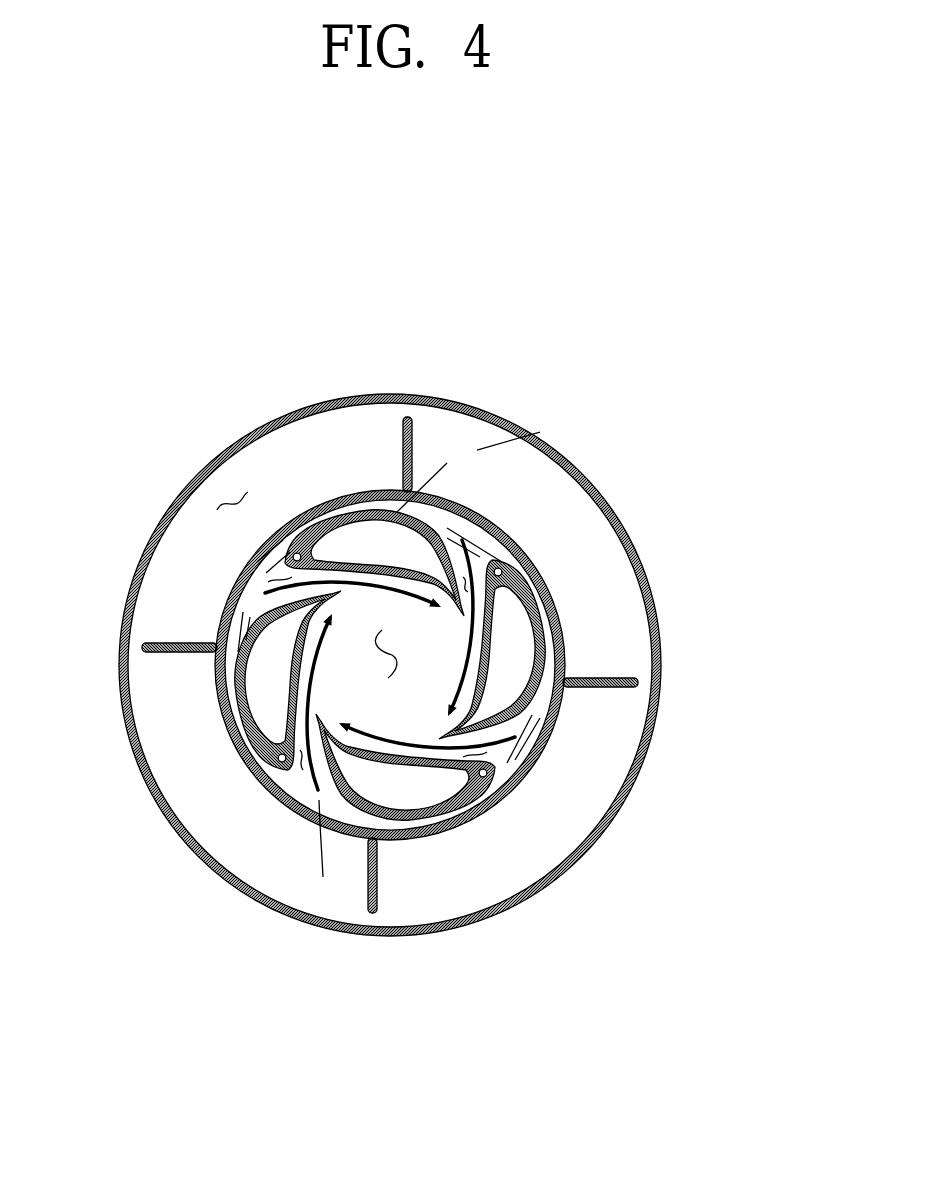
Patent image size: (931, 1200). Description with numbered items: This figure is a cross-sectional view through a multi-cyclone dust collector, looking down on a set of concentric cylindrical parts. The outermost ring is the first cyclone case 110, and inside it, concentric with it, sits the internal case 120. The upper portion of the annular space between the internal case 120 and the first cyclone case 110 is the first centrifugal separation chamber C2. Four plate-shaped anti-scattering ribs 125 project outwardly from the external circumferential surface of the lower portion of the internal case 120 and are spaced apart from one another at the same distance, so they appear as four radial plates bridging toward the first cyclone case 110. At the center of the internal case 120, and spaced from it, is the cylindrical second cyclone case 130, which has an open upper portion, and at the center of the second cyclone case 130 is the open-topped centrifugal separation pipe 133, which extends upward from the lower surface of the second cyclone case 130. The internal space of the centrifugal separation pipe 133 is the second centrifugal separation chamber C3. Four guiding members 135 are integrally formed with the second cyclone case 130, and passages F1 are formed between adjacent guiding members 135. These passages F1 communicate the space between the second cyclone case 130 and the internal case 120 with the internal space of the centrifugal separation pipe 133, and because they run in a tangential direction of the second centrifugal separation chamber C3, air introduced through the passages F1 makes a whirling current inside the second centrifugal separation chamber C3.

The first cyclone case 110 is at (497, 415).
The internal case 120 is at (520, 549).
The anti-scattering rib 125 is at (398, 453).
The second cyclone case 130 is at (465, 600).
The centrifugal separation pipe 133 is at (573, 422).
The guiding member 135 is at (430, 535).
The passage F1 is at (286, 576).
The first centrifugal separation chamber C2 is at (230, 497).
The second centrifugal separation chamber C3 is at (400, 648).